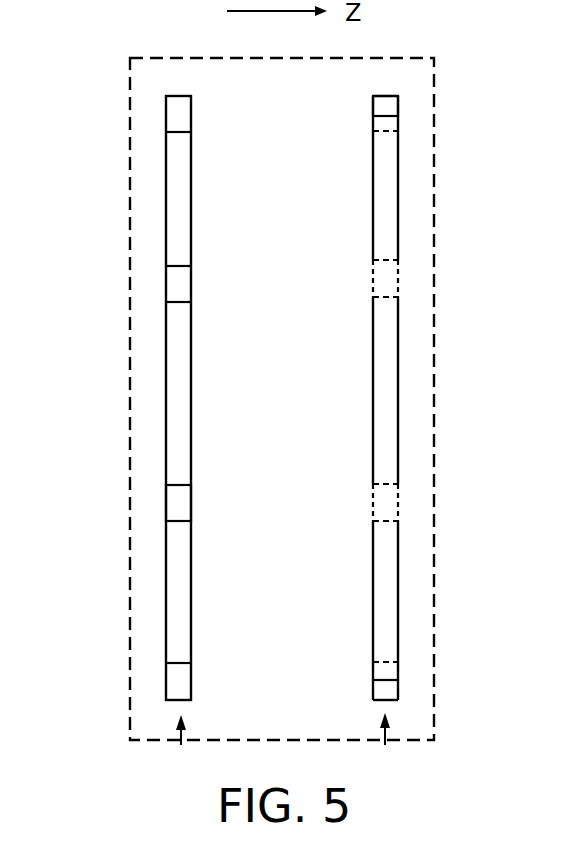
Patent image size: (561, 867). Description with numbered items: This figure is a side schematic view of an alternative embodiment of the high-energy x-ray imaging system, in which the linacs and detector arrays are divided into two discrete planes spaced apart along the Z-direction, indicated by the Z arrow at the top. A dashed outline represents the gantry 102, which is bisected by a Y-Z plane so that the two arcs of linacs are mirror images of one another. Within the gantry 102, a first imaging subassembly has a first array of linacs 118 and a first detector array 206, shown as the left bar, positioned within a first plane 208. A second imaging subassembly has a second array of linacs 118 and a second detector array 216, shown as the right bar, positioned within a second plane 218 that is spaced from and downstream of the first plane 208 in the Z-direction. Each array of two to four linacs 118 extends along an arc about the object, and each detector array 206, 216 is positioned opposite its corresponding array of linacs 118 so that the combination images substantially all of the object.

The gantry 102 is at (123, 105).
The linacs 118 is at (175, 502).
The first detector array 206 is at (170, 378).
The second detector array 216 is at (400, 408).
The first plane 208 is at (181, 735).
The second plane 218 is at (385, 735).